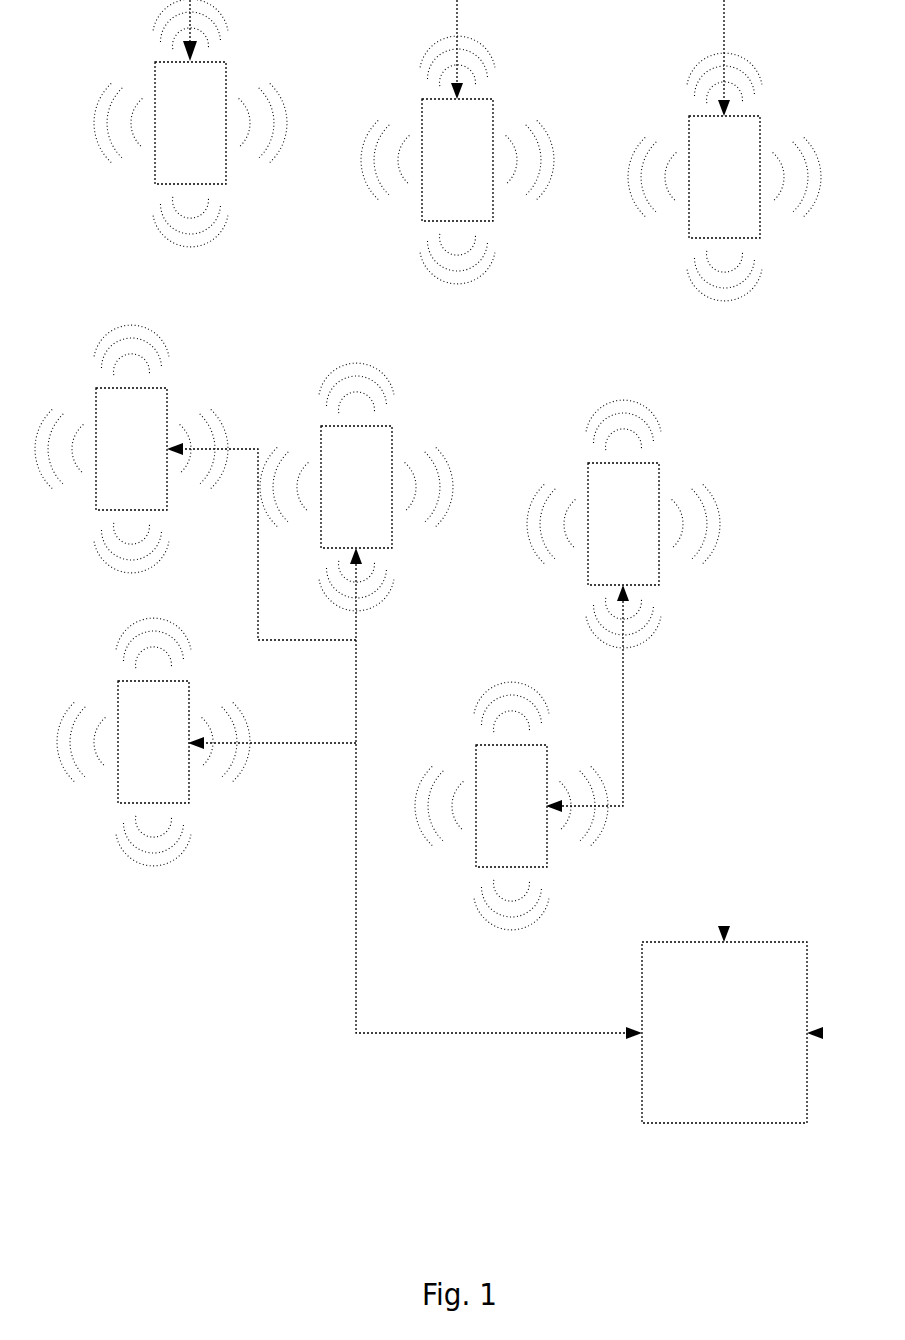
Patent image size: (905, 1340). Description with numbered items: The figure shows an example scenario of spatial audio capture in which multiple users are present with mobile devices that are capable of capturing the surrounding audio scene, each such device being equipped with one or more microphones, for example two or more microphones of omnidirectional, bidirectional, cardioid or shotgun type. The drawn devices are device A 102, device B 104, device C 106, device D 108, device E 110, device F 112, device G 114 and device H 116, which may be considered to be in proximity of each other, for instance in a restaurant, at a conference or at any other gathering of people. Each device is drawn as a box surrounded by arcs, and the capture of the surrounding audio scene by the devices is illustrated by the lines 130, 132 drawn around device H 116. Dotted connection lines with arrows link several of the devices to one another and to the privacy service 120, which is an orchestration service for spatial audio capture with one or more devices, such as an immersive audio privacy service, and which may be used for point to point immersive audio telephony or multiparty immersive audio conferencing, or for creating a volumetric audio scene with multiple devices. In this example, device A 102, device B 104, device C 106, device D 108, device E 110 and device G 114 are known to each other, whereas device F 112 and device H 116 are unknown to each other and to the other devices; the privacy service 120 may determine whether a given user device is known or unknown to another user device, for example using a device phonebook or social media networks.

The device A 102 is at (107, 412).
The device B 104 is at (163, 125).
The device C 106 is at (336, 450).
The device D 108 is at (448, 200).
The device E 110 is at (707, 202).
The device F 112 is at (602, 488).
The device G 114 is at (497, 768).
The device H 116 is at (133, 715).
The privacy service 120 is at (677, 1095).
The line 130 is at (158, 862).
The line 132 is at (65, 760).